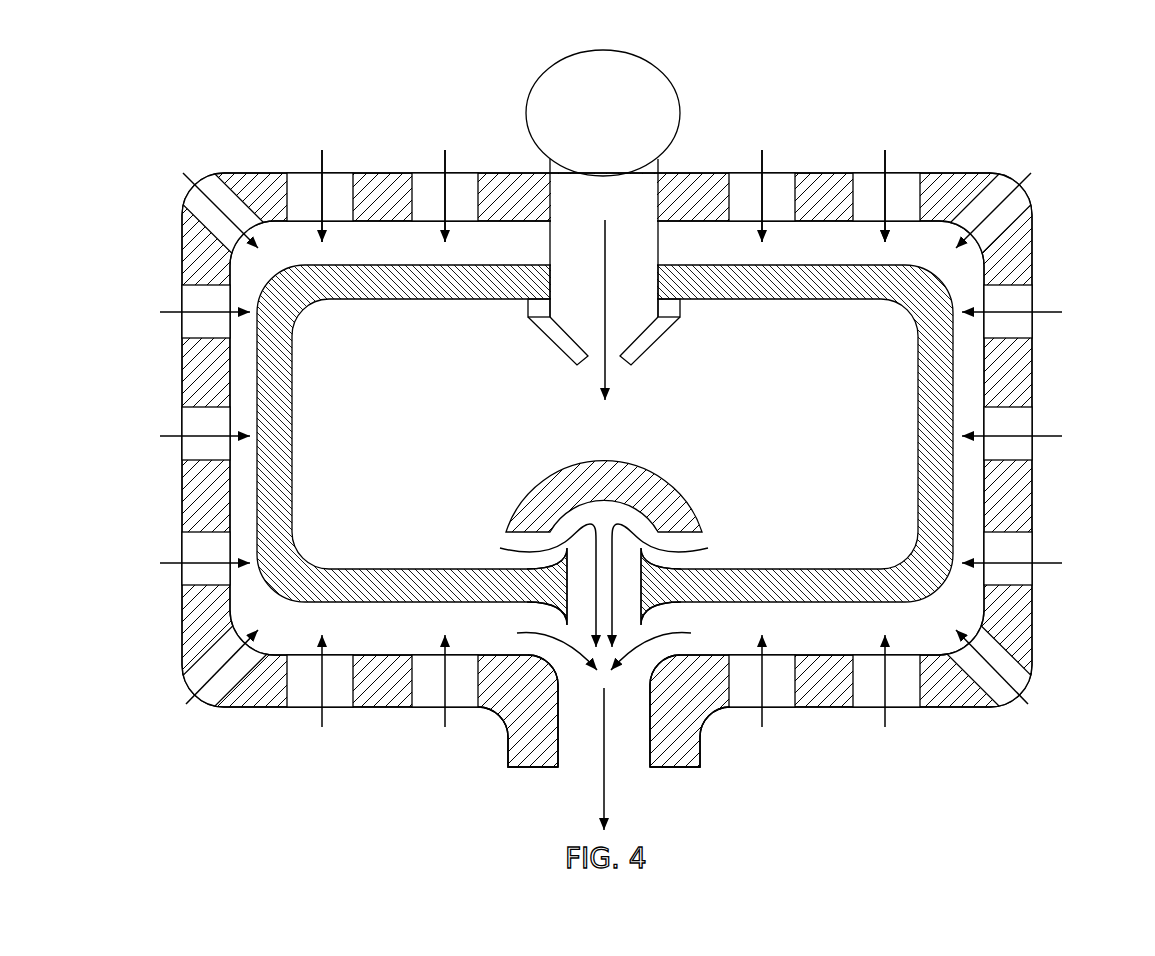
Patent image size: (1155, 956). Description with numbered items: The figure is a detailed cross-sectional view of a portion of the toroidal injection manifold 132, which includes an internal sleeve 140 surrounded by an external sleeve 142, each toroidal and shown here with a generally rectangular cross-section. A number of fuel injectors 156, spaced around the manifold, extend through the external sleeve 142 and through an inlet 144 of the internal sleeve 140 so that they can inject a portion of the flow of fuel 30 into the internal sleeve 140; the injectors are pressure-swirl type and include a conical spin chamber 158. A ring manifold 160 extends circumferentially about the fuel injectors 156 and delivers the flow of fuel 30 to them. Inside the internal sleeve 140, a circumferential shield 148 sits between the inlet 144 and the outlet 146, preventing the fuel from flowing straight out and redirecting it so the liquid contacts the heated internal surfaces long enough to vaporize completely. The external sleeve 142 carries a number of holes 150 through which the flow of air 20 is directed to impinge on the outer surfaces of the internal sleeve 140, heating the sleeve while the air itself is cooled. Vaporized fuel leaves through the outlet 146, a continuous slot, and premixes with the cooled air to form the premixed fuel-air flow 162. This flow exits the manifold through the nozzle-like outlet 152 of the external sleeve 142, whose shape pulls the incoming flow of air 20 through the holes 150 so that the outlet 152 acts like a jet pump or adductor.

The toroidal injection manifold 132 is at (208, 71).
The external sleeve 142 is at (957, 172).
The holes 150 is at (390, 173).
The outlet 152 is at (537, 752).
The internal sleeve 140 is at (918, 407).
The inlet 144 is at (660, 280).
The outlet 146 is at (635, 594).
The fuel injectors 156 is at (661, 166).
The conical spin chamber 158 is at (643, 333).
The ring manifold 160 is at (677, 91).
The circumferential shield 148 is at (653, 475).
The flow of air 20 is at (445, 165).
The flow of fuel 30 is at (605, 282).
The premixed fuel-air flow 162 is at (604, 798).